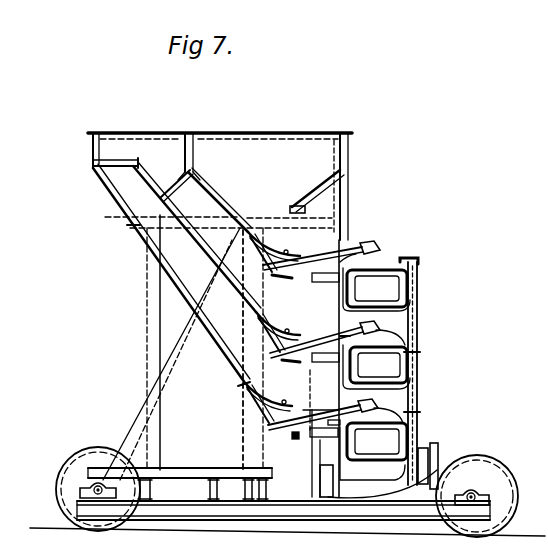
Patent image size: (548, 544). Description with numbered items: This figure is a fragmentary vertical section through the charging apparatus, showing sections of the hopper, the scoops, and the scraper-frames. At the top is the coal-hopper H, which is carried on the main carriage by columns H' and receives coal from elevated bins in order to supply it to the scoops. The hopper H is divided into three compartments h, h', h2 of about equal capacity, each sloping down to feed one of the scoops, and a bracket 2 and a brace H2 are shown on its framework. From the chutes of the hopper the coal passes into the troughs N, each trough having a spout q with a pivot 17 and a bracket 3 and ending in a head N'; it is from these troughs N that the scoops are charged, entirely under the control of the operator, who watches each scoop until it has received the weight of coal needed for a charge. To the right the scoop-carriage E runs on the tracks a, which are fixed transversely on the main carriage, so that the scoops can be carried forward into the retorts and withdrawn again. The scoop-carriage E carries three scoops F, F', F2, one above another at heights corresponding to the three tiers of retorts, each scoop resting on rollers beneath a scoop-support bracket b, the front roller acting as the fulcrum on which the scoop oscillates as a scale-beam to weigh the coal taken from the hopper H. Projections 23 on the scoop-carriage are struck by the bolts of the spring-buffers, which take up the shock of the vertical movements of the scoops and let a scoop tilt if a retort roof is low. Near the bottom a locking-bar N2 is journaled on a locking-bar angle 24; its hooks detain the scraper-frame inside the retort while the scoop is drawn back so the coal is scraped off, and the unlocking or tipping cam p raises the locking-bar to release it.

The coal-hopper H is at (207, 315).
The bracket 2 is at (115, 156).
The hopper compartment h is at (252, 191).
The hopper compartment h' is at (216, 200).
The hopper compartment h2 is at (177, 274).
The spout q is at (272, 317).
The pivot 17 is at (294, 320).
The bracket 3 is at (265, 329).
The trough N is at (313, 333).
The lever head N' is at (381, 330).
The locking-bar N2 is at (348, 339).
The locking-bar angle 24 is at (356, 266).
The bracket b is at (339, 290).
The scoop F is at (376, 289).
The scoop F' is at (376, 367).
The scoop F2 is at (373, 451).
The scoop-carriage E is at (423, 375).
The projection 23 is at (410, 259).
The column H' is at (219, 342).
The brace H2 is at (171, 354).
The unlocking or tipping cam p is at (323, 454).
The track a is at (382, 489).